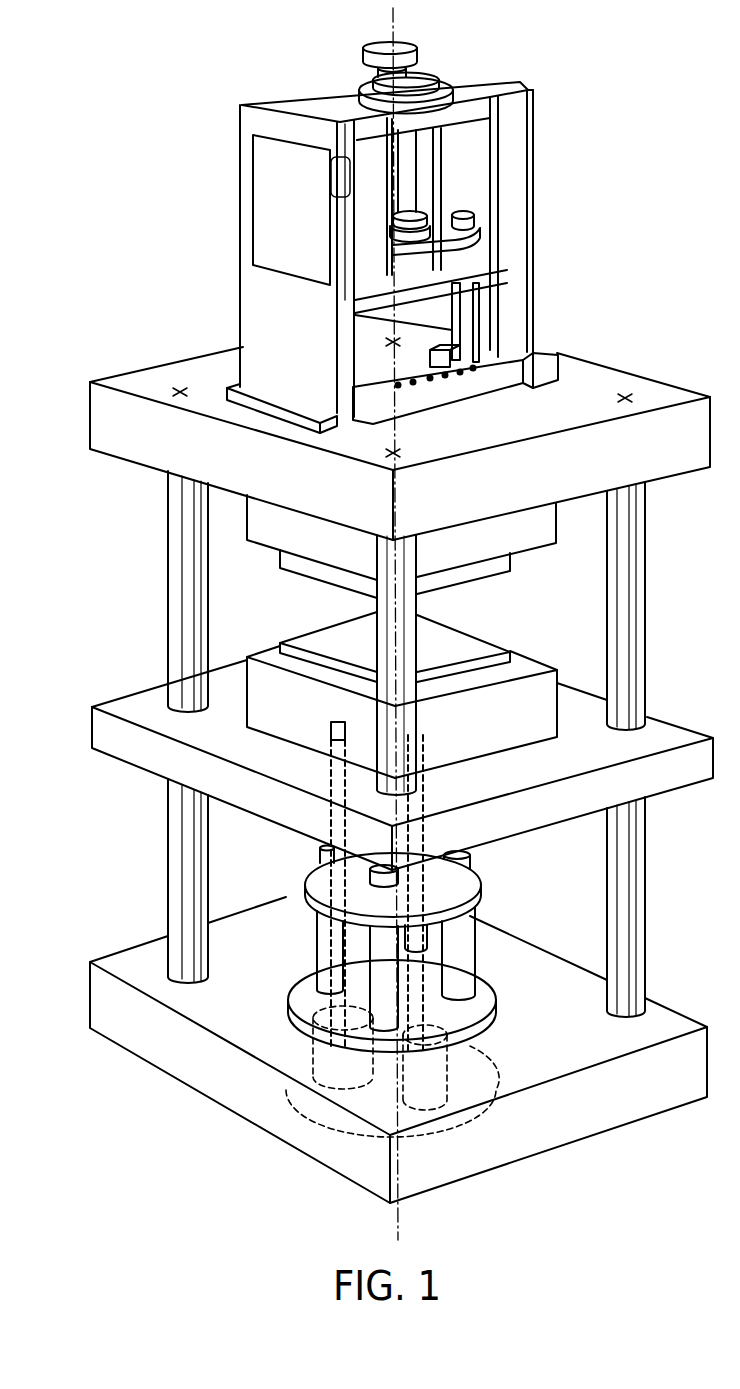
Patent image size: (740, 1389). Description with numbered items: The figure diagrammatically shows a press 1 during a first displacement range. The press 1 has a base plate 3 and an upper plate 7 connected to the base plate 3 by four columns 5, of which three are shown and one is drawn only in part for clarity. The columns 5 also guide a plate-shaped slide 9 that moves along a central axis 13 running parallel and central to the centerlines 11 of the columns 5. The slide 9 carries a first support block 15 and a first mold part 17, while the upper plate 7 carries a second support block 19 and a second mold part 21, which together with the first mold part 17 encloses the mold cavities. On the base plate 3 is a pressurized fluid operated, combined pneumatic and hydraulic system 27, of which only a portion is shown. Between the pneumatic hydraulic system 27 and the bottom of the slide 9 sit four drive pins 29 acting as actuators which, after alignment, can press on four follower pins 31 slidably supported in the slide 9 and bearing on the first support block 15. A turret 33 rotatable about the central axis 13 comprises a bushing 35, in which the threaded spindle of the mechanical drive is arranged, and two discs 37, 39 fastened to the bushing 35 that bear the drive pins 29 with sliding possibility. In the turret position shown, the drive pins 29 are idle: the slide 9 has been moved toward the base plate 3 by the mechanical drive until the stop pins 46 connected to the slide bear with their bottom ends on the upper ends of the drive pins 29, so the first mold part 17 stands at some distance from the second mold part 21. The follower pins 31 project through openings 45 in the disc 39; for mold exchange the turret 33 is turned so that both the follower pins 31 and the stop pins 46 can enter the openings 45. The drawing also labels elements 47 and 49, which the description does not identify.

The press 1 is at (562, 84).
The base plate 3 is at (98, 995).
The columns 5 is at (172, 545).
The upper plate 7 is at (95, 408).
The plate-shaped slide 9 is at (97, 734).
The centerlines of the columns 11 is at (390, 530).
The central axis 13 is at (398, 26).
The first support block 15 is at (547, 695).
The first mold part 17 is at (497, 660).
The second support block 19 is at (523, 542).
The second mold part 21 is at (487, 570).
The combined pneumatic and hydraulic system 27 is at (303, 1057).
The drive pins 29 is at (467, 927).
The follower pins 31 is at (327, 780).
The turret 33 is at (385, 937).
The bushing 35 is at (427, 987).
The disc 37 is at (483, 1017).
The disc 39 is at (477, 890).
The openings 45 is at (323, 917).
The stop pins 46 is at (470, 853).
The upper frame unit 47 is at (214, 211).
The recess in base 49 is at (470, 1112).